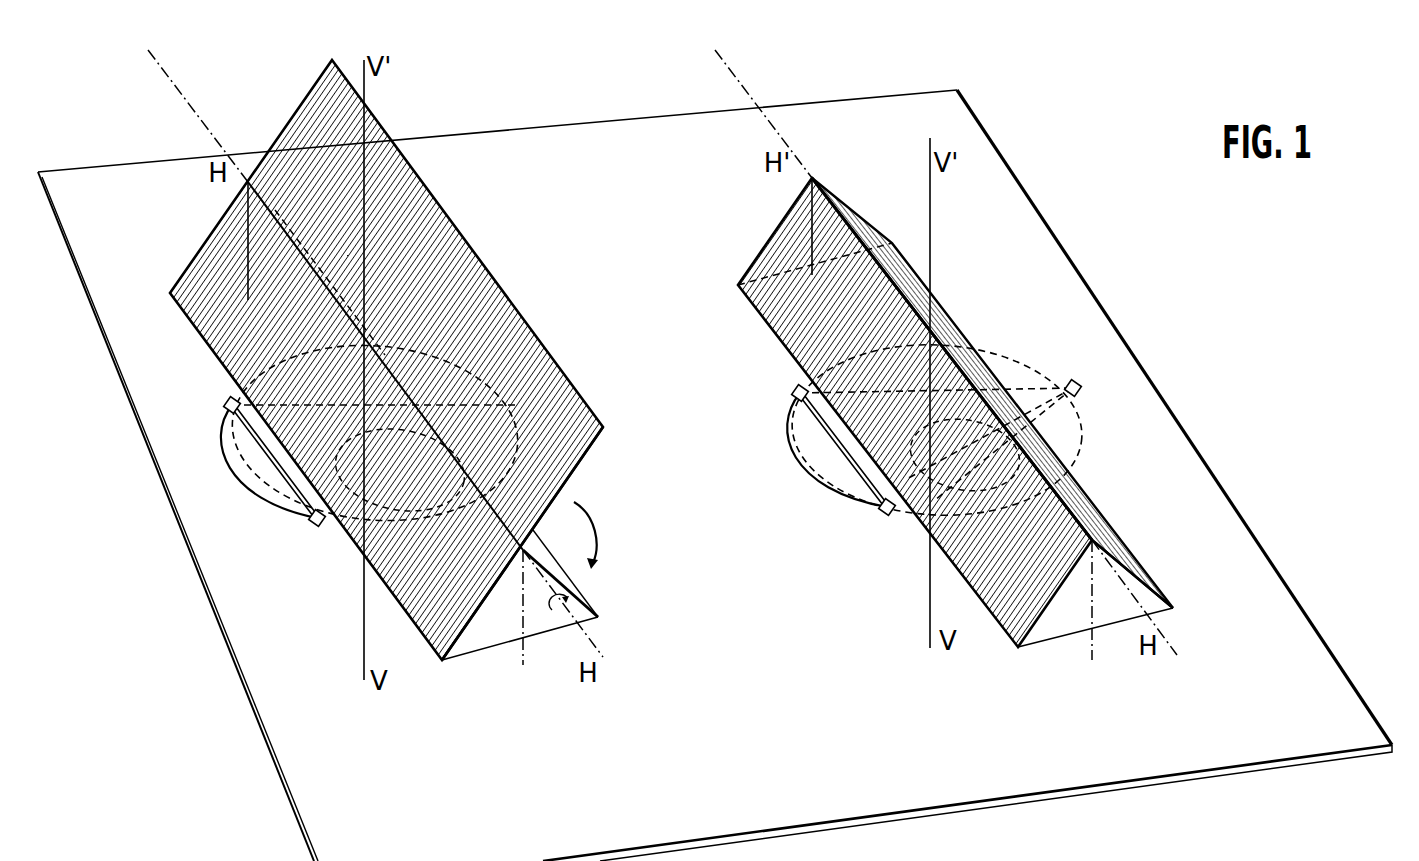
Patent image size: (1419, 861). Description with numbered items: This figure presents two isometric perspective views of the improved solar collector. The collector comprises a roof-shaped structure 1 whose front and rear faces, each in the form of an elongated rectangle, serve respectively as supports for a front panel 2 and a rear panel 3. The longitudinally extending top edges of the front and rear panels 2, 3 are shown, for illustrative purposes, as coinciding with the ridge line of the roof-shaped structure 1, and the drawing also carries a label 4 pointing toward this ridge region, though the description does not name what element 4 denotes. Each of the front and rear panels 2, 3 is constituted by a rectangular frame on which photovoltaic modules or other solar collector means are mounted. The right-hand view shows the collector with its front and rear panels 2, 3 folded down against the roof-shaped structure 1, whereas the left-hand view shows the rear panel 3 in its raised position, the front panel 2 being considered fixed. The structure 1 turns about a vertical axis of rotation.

The roof-shaped structure 1 is at (592, 586).
The front panel 2 is at (478, 616).
The rear panel 3 is at (582, 479).
The hinge axis 4 is at (535, 530).